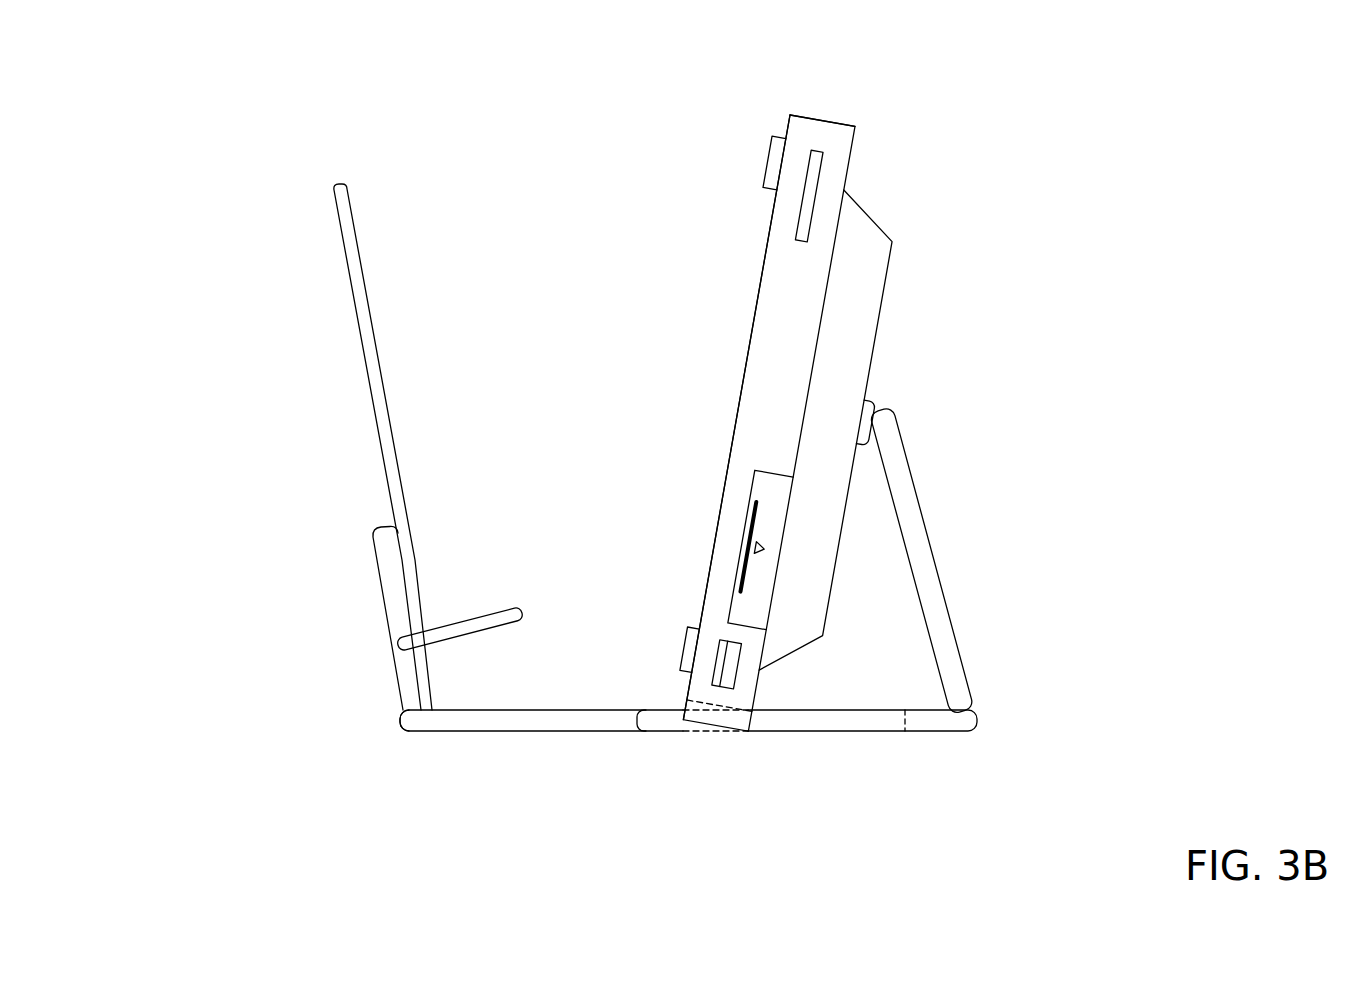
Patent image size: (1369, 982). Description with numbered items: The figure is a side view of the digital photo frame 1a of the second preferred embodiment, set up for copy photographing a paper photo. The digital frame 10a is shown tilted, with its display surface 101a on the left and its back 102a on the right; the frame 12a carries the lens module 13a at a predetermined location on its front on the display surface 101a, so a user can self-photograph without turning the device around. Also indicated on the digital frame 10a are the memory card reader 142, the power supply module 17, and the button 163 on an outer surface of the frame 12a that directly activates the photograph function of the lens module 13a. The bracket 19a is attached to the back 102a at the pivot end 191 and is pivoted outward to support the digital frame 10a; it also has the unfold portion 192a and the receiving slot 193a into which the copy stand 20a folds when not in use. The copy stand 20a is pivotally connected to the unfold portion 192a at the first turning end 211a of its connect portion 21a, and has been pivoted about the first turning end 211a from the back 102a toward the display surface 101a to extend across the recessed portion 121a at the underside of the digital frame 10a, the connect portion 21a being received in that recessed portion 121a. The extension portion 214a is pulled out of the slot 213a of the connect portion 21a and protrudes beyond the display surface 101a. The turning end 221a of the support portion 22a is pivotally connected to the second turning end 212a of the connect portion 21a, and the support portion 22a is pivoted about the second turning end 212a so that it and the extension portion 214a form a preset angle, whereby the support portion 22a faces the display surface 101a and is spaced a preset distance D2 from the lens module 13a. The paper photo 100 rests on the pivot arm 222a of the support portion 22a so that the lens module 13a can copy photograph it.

The digital photo frame 1a is at (1041, 281).
The digital frame 10a is at (836, 110).
The frame 12a is at (842, 135).
The lens module 13a is at (775, 138).
The memory card reader 142 is at (813, 185).
The paper photo 100 is at (347, 224).
The preset distance D2 is at (770, 160).
The display surface 101a is at (748, 347).
The back 102a is at (817, 360).
The pivot end 191 is at (873, 403).
The receiving slot 193a is at (885, 458).
The bracket 19a is at (932, 563).
The power supply module 17 is at (762, 488).
The button 163 is at (687, 640).
The recessed portion 121a is at (703, 700).
The unfold portion 192a is at (966, 722).
The slot 213a is at (905, 722).
The first turning end 211a is at (945, 722).
The second turning end 212a is at (414, 722).
The extension portion 214a is at (572, 720).
The turning end 221a is at (418, 703).
The pivot arm 222a is at (447, 633).
The support portion 22a is at (378, 684).
The connect portion 21a is at (514, 742).
The copy stand 20a is at (497, 846).